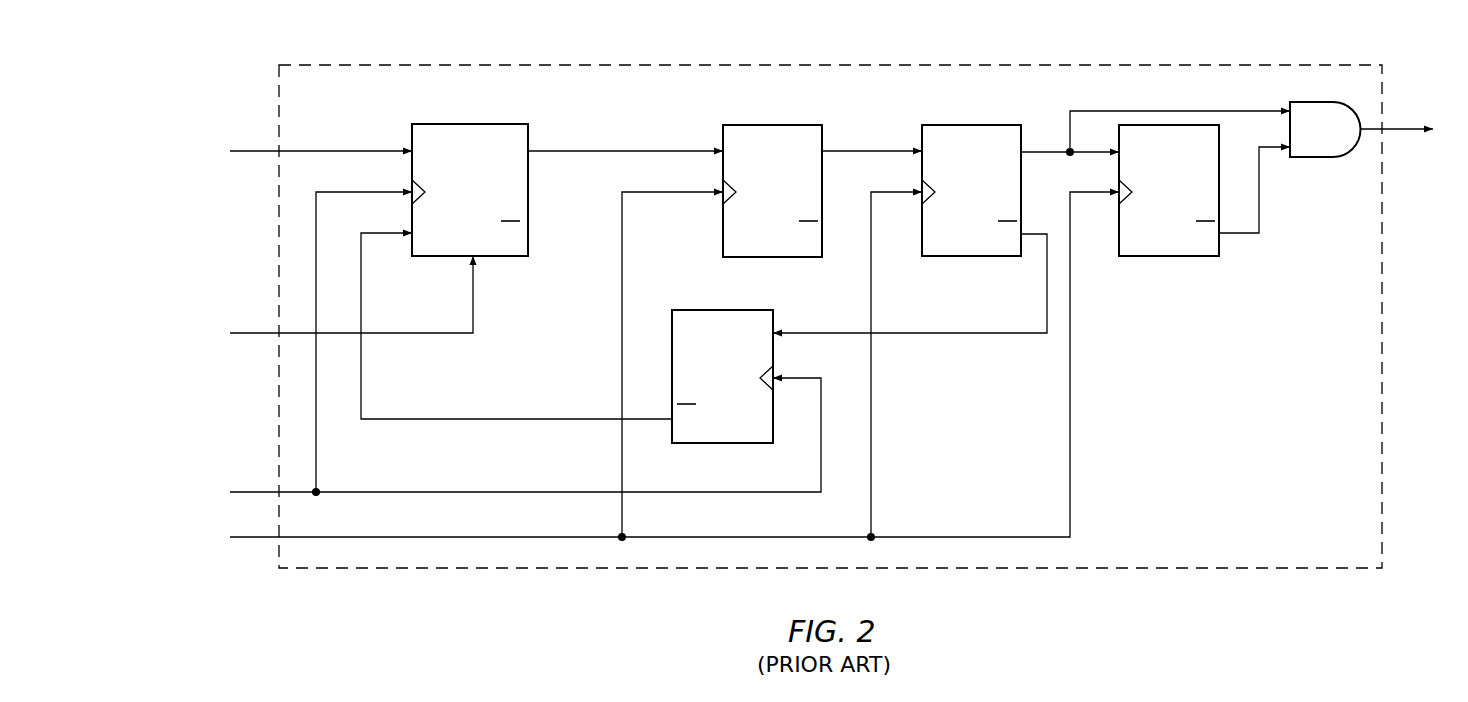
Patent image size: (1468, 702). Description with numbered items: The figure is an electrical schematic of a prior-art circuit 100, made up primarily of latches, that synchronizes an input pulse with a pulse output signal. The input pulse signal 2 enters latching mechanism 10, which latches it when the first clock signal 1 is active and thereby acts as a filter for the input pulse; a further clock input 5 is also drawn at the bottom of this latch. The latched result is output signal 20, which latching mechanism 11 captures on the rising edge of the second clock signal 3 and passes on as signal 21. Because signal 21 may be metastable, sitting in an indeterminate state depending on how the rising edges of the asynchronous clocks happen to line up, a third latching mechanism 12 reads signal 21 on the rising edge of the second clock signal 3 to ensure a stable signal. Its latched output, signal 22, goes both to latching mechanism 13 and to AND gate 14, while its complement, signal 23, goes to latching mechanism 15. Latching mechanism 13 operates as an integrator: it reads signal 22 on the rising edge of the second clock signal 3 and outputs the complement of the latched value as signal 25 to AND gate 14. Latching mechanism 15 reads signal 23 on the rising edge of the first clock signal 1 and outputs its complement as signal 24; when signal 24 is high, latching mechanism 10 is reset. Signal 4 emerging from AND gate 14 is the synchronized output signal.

The circuit 100 is at (1188, 65).
The latching mechanism 10 is at (470, 123).
The latching mechanism 11 is at (775, 124).
The third latching mechanism 12 is at (967, 257).
The latching mechanism 13 is at (1168, 257).
The AND gate 14 is at (1318, 160).
The latching mechanism 15 is at (722, 310).
The first clock signal 1 is at (248, 491).
The input pulse signal 2 is at (248, 150).
The second clock signal 3 is at (248, 536).
The synchronized output signal 4 is at (1410, 122).
The clock input to flip-flop 10 5 is at (248, 332).
The output signal 20 is at (623, 150).
The signal 21 is at (878, 150).
The signal 22 is at (1050, 150).
The signal 23 is at (912, 334).
The signal 24 is at (530, 418).
The signal 25 is at (1262, 210).